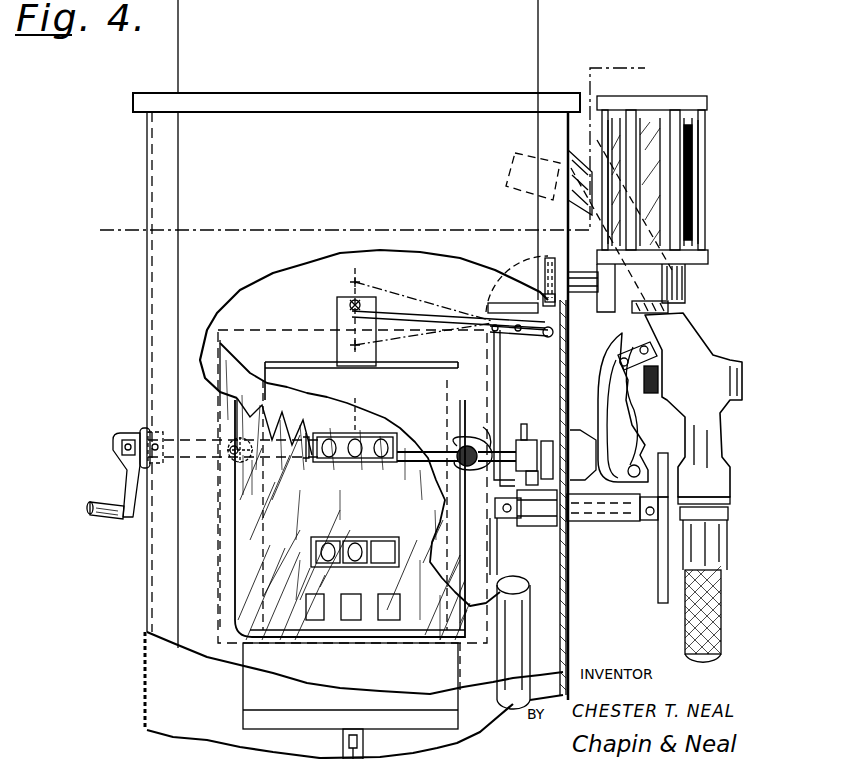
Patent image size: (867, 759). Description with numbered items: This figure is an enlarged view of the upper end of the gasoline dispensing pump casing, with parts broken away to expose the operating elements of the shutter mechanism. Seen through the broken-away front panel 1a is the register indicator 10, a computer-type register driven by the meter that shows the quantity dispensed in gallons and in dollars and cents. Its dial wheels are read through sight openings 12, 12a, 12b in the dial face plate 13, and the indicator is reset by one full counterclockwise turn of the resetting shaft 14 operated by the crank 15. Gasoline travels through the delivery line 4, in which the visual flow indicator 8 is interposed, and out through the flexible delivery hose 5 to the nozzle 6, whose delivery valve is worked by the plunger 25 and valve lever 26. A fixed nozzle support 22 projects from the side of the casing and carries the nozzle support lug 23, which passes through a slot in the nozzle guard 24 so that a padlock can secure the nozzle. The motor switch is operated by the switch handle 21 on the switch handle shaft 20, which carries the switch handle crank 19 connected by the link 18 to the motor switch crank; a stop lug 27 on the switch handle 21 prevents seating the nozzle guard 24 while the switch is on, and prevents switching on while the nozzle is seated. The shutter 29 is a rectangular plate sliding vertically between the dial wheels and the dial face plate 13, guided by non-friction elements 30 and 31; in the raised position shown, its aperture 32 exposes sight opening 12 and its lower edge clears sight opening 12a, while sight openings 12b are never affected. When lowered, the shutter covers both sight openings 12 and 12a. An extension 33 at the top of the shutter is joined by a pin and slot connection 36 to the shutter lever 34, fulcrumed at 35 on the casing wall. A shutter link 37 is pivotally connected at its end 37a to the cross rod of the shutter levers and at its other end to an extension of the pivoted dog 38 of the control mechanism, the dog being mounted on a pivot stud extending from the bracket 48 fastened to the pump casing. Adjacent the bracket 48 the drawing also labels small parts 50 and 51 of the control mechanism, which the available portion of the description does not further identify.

The front panel 1a is at (254, 270).
The delivery line 4 is at (530, 270).
The flexible delivery hose 5 is at (122, 240).
The nozzle 6 is at (687, 343).
The visual flow indicator 8 is at (657, 155).
The register indicator 10 is at (252, 690).
The sight opening 12 is at (335, 432).
The sight opening 12a is at (318, 562).
The sight opening 12b is at (306, 602).
The dial face plate 13 is at (230, 365).
The resetting shaft 14 is at (204, 438).
The crank 15 is at (126, 474).
The link 18 is at (520, 588).
The switch handle crank 19 is at (494, 526).
The switch handle shaft 20 is at (650, 522).
The switch handle 21 is at (658, 590).
The nozzle support 22 is at (592, 521).
The nozzle support lug 23 is at (640, 461).
The nozzle guard 24 is at (600, 430).
The plunger 25 is at (660, 382).
The valve lever 26 is at (644, 420).
The stop lug 27 is at (660, 455).
The shutter 29 is at (352, 510).
The non-friction element 30 is at (228, 478).
The non-friction element 31 is at (458, 444).
The aperture 32 is at (362, 430).
The extension 33 is at (337, 323).
The shutter lever 34 is at (417, 312).
The fulcrum 35 is at (542, 336).
The pin and slot connection 36 is at (352, 308).
The shutter link 37 is at (498, 384).
The link end 37a is at (492, 334).
The pivoted dog 38 is at (560, 530).
The bracket 48 is at (548, 440).
The valve casing 50 is at (508, 462).
The valve stem 51 is at (524, 426).